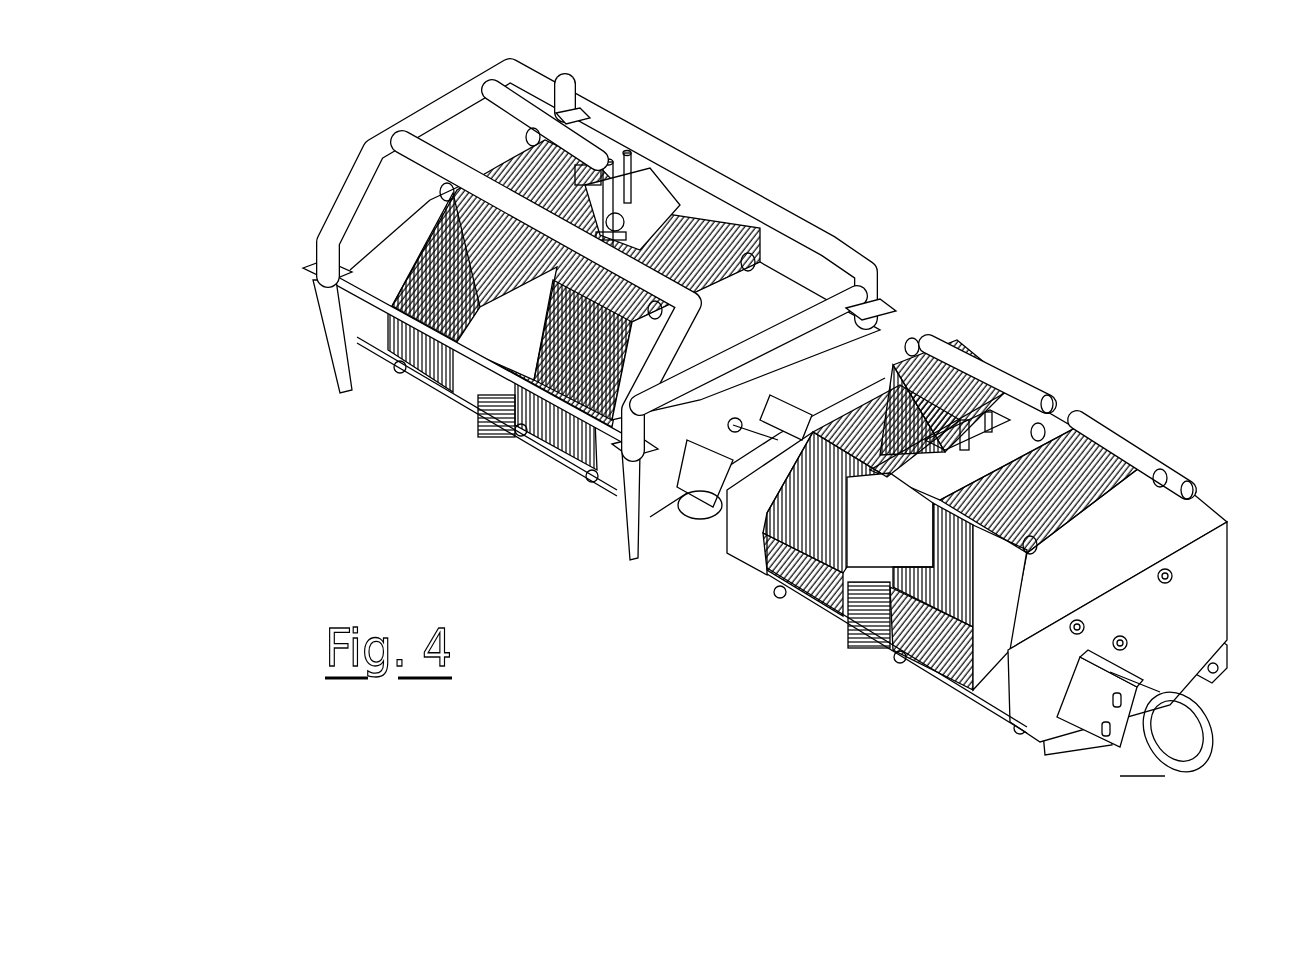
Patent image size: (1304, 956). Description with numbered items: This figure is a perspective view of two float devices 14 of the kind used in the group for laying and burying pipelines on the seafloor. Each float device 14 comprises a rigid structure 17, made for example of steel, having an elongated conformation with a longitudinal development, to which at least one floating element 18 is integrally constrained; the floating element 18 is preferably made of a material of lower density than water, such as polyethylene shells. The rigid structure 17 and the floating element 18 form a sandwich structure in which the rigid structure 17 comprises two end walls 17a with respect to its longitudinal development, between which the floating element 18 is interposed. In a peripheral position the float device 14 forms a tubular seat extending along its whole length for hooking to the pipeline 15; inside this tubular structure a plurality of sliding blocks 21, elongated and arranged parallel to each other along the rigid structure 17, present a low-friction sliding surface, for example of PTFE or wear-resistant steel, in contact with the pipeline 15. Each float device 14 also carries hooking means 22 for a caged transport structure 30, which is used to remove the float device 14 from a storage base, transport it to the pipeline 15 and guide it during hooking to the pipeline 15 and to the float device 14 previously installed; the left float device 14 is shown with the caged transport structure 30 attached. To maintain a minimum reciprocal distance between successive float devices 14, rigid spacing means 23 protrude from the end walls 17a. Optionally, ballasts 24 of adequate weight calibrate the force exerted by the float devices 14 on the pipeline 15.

The float device 14 is at (708, 108).
The pipeline 15 is at (1135, 745).
The rigid structure 17 is at (498, 320).
The end walls 17a is at (387, 263).
The floating element 18 is at (400, 370).
The sliding blocks 21 is at (1100, 742).
The hooking means to caged transport structure 22 is at (648, 145).
The rigid spacing means 23 is at (705, 490).
The ballasts 24 is at (480, 405).
The caged transport structure 30 is at (730, 232).